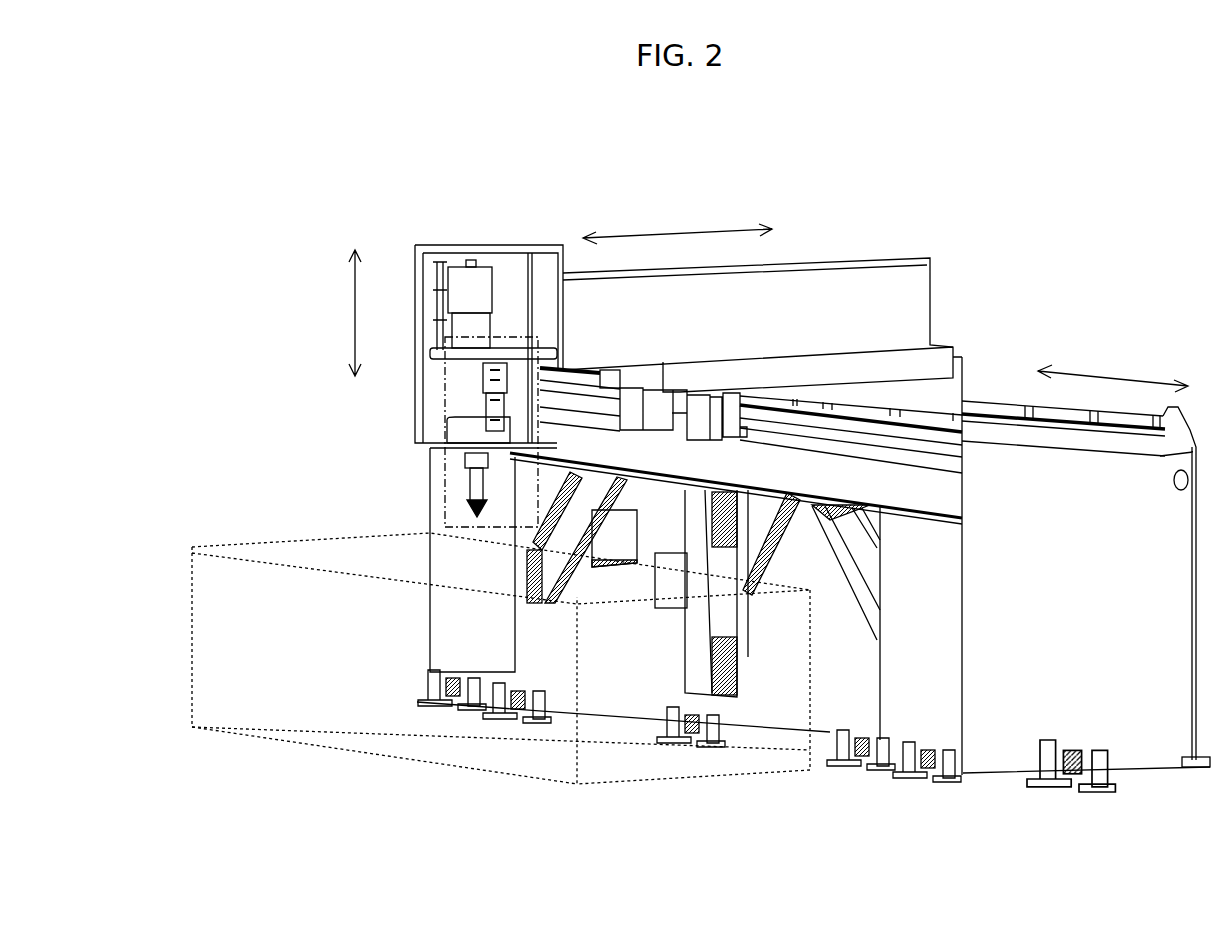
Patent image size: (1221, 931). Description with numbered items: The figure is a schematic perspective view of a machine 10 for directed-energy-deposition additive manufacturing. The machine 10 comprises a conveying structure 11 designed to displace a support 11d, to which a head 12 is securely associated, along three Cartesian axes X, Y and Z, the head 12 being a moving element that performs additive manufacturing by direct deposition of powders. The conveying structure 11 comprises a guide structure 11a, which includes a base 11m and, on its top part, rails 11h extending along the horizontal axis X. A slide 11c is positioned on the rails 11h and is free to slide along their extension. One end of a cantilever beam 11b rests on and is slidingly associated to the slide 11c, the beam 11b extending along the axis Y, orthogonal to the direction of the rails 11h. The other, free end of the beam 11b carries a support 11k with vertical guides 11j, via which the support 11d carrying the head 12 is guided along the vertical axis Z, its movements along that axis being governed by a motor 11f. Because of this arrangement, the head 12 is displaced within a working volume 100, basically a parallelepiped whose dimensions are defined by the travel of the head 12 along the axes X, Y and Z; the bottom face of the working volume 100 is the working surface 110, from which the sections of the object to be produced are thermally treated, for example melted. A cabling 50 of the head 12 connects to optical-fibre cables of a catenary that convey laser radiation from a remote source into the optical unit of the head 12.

The machine 10 is at (319, 290).
The conveying structure 11 is at (926, 259).
The guide structure 11a is at (1062, 443).
The cantilever beam 11b is at (814, 262).
The slide 11c is at (943, 357).
The support 11d is at (443, 360).
The motor 11f is at (460, 298).
The rails 11h is at (1033, 403).
The vertical guides 11j is at (443, 337).
The support 11k is at (473, 250).
The base 11m is at (923, 650).
The head 12 is at (442, 478).
The cabling 50 is at (495, 342).
The working volume 100 is at (645, 767).
The working surface 110 is at (430, 748).